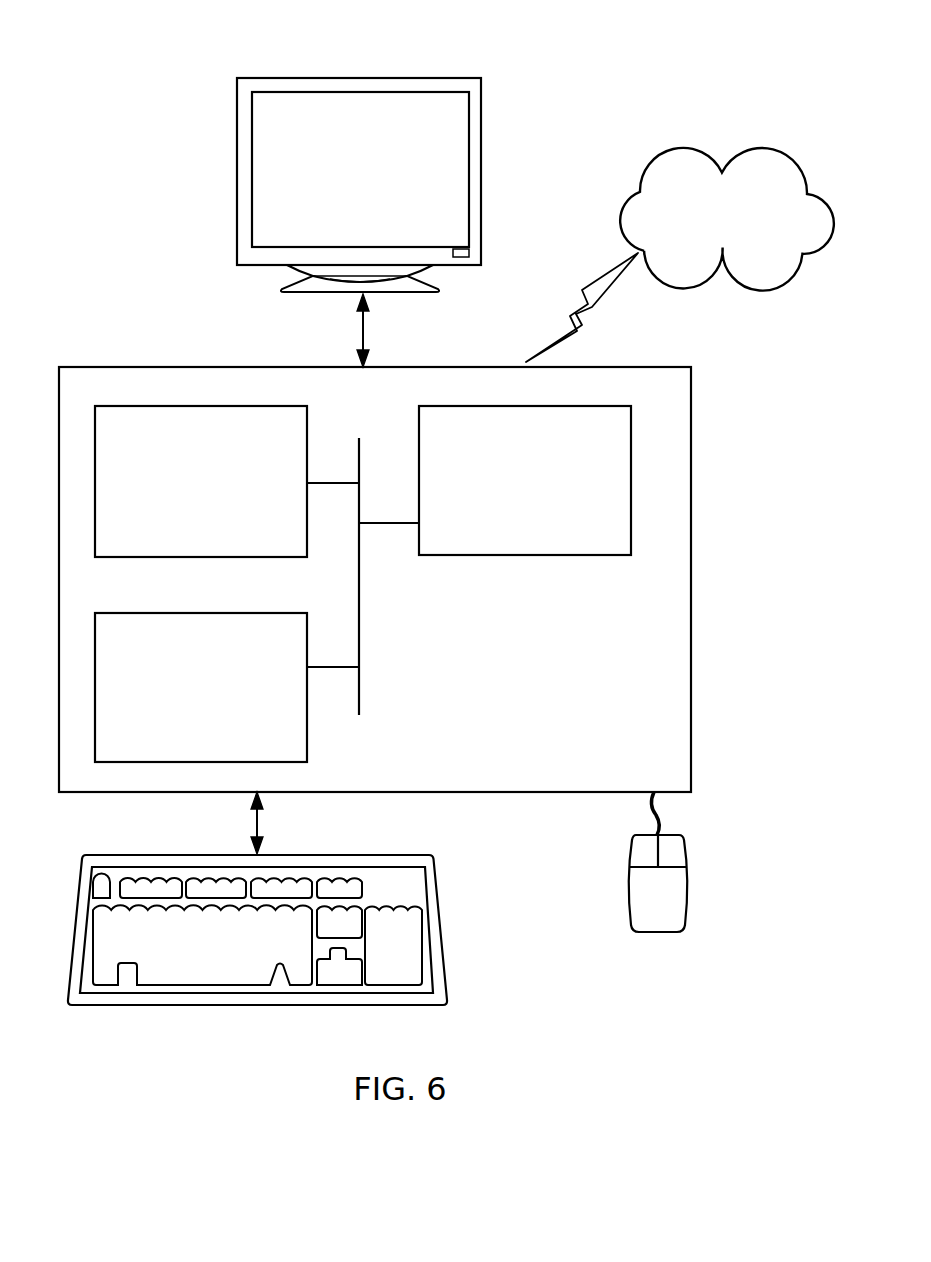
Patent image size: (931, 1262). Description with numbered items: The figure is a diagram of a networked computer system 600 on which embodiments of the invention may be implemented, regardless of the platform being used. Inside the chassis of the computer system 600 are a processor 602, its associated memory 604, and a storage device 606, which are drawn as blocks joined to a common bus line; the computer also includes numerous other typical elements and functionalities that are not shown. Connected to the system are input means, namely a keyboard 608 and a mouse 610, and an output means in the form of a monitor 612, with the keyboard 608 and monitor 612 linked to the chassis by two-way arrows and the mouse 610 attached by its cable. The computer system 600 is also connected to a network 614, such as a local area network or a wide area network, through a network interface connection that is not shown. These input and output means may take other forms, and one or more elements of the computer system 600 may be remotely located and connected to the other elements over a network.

The networked computer system 600 is at (626, 98).
The processor 602 is at (504, 479).
The memory 604 is at (178, 480).
The storage device 606 is at (178, 684).
The keyboard 608 is at (178, 937).
The mouse 610 is at (695, 942).
The monitor 612 is at (340, 180).
The network 614 is at (699, 216).